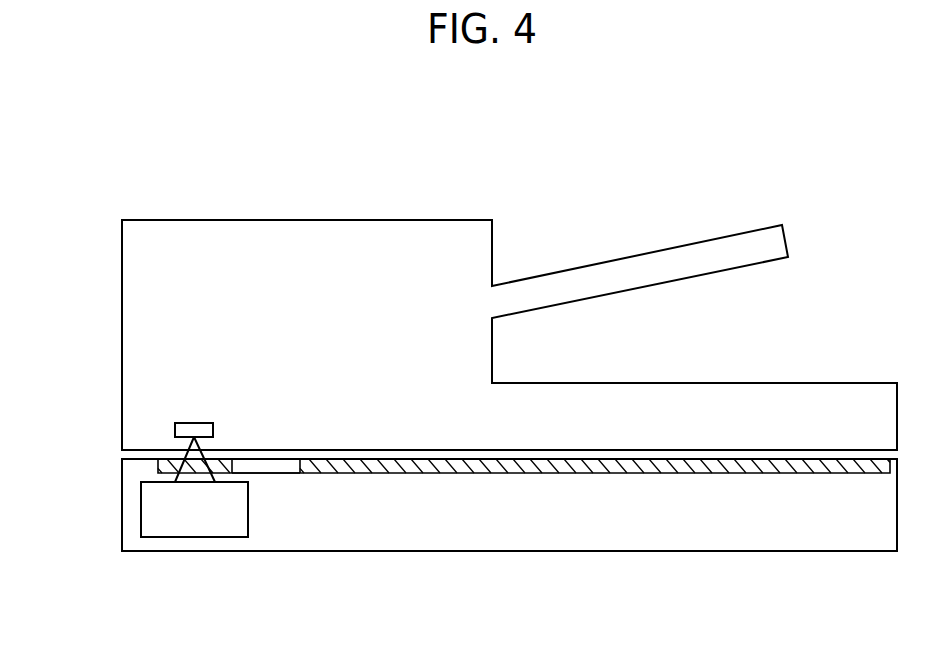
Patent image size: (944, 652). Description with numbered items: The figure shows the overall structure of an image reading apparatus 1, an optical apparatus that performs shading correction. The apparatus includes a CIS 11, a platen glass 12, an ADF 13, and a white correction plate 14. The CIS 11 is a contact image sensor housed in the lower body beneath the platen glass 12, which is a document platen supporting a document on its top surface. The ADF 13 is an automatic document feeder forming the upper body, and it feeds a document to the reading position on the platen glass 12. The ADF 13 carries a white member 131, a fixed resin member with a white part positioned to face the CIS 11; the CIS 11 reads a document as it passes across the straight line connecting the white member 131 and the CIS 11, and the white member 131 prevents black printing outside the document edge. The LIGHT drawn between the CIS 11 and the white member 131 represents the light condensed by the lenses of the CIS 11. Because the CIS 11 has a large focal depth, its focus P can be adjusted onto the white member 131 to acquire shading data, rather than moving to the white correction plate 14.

The image reading apparatus 1 is at (756, 174).
The ADF 13 is at (140, 218).
The white member 131 is at (192, 424).
The focus P is at (190, 442).
The light LIGHT is at (195, 473).
The CIS 11 is at (190, 537).
The platen glass 12 is at (511, 473).
The white correction plate 14 is at (274, 470).